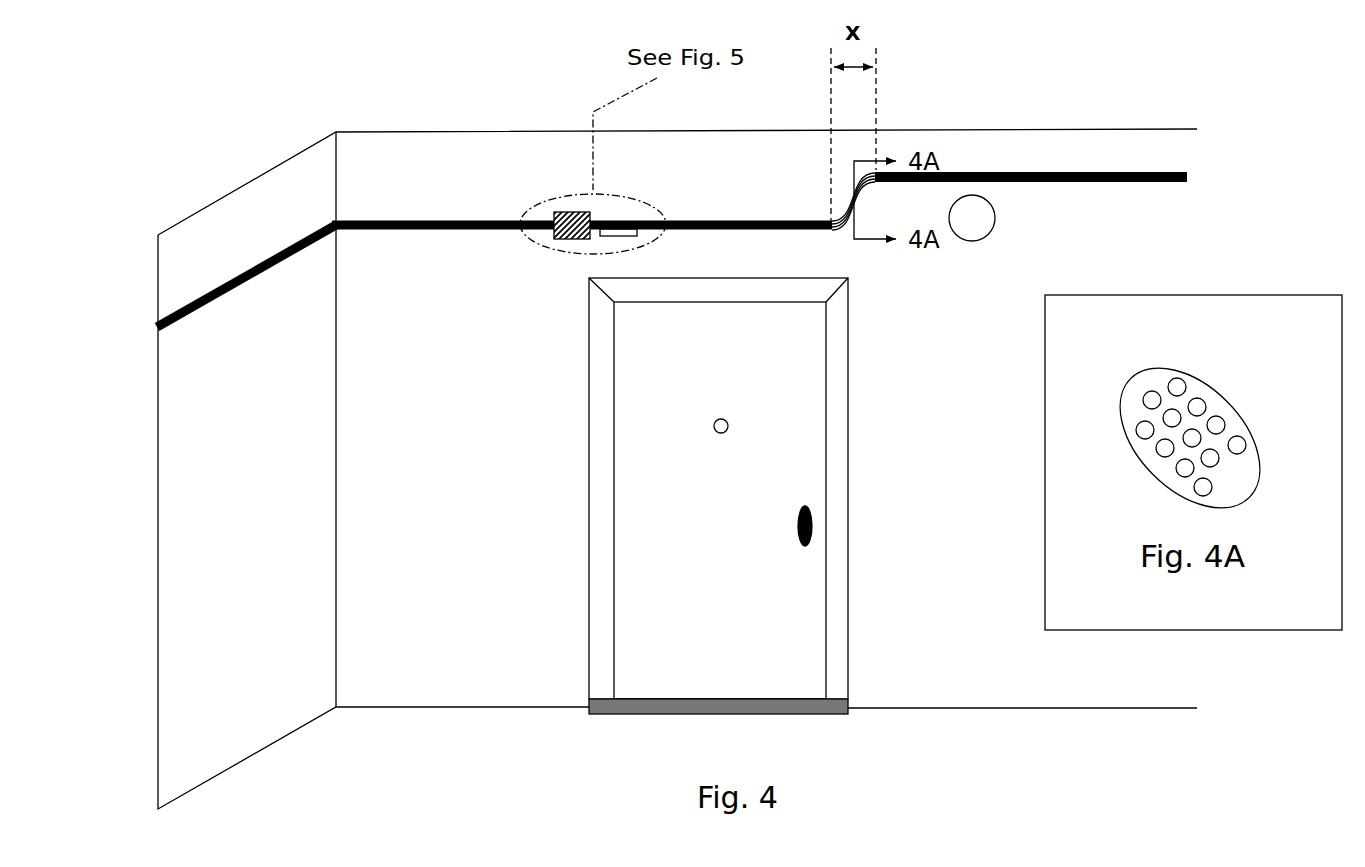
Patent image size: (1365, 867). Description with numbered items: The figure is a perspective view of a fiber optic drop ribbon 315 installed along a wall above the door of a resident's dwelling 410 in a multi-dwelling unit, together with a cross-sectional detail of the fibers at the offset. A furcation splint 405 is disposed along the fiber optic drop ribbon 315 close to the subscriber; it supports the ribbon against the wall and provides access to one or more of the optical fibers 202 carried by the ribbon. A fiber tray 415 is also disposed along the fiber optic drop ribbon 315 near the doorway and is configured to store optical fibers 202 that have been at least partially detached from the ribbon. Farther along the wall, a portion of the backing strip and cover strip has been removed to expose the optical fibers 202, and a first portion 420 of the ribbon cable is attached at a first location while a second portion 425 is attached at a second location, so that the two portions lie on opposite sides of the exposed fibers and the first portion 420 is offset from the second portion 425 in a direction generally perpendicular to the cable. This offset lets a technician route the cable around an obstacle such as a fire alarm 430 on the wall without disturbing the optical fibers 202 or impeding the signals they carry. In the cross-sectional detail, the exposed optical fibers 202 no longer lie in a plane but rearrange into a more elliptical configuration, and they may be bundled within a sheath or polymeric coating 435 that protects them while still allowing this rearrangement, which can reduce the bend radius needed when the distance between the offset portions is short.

In FIG. 4, the fiber optic drop ribbon 315 is at (262, 245).
In FIG. 4, the first portion 420 is at (765, 220).
In FIG. 4, the second portion 425 is at (945, 172).
In FIG. 4, the optical fibers 202 is at (841, 196).
In FIG. 4A, the optical fibers 202 is at (1237, 445).
In FIG. 4, the fire alarm 430 is at (982, 224).
In FIG. 4, the furcation splint 405 is at (558, 240).
In FIG. 4, the fiber tray 415 is at (640, 238).
In FIG. 4, the resident's dwelling 410 is at (670, 565).
In FIG. 4A, the sheath or polymeric coating 435 is at (1123, 400).